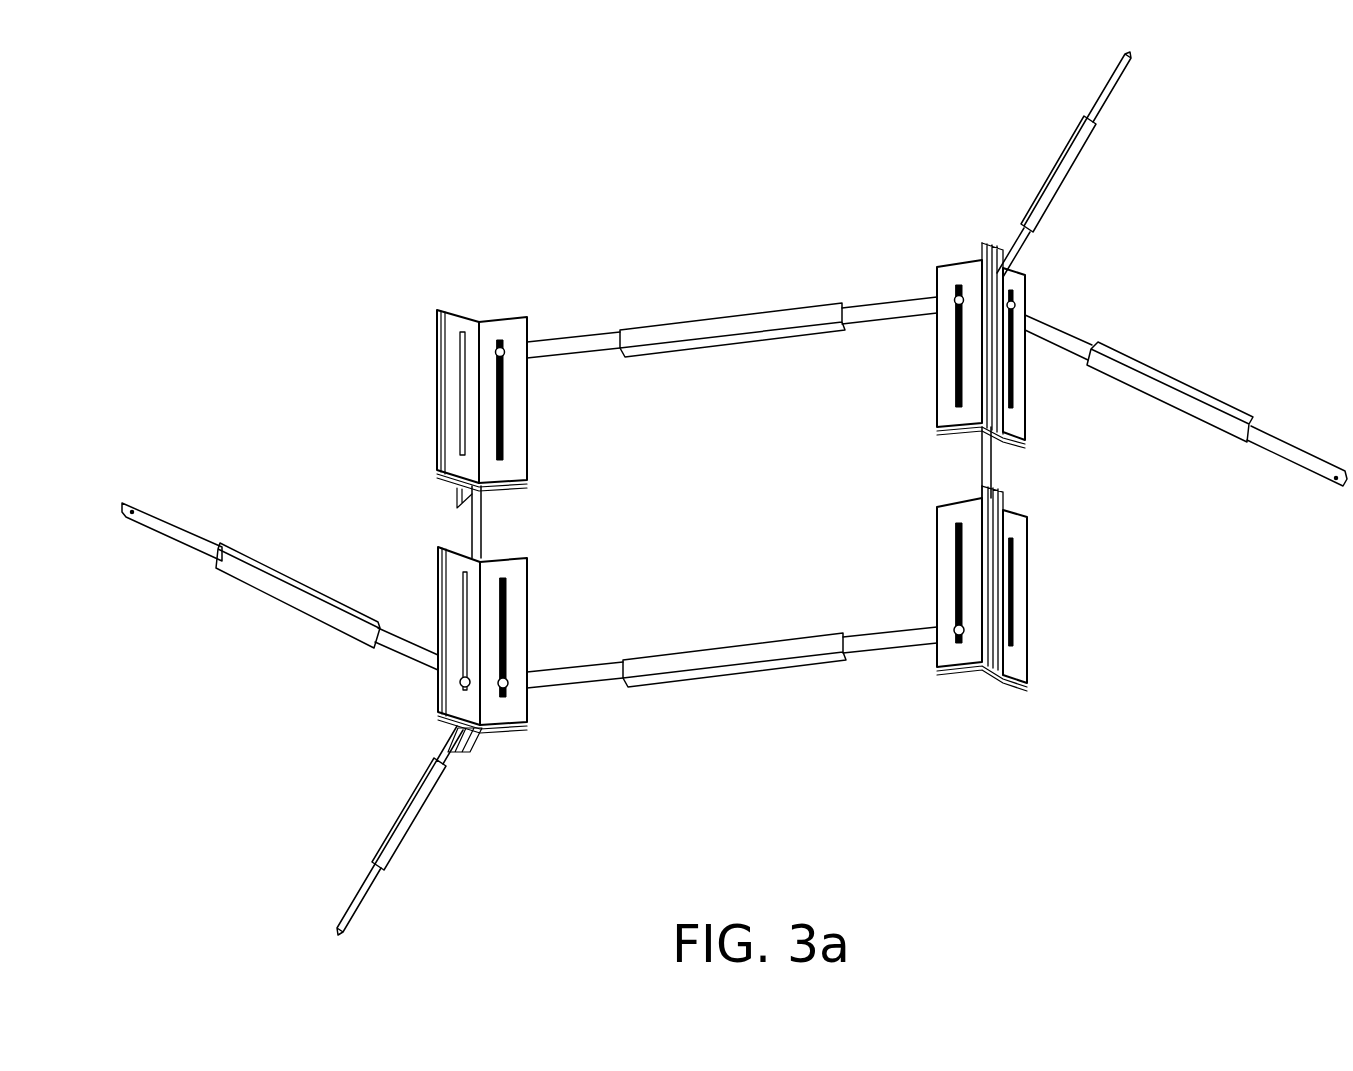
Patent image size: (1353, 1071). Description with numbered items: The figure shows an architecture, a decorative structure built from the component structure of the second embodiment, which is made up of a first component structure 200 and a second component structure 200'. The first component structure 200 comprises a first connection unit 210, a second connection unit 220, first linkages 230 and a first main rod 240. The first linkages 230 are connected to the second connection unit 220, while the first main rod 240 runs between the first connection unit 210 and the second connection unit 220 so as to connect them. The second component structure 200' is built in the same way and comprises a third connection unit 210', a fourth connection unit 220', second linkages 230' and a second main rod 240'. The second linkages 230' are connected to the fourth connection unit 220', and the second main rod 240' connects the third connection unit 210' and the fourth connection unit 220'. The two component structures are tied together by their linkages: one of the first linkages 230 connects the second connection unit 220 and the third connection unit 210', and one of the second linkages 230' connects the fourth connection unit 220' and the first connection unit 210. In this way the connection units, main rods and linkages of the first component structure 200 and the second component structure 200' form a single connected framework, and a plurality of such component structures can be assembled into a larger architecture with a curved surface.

The first component structure 200 is at (535, 481).
The first connection unit 210 is at (533, 409).
The second connection unit 220 is at (535, 649).
The first linkages 230 is at (529, 711).
The first main rod 240 is at (532, 522).
The second component structure 200' is at (1041, 422).
The third connection unit 210' is at (1041, 588).
The fourth connection unit 220' is at (1036, 345).
The second linkages 230' is at (937, 269).
The second main rod 240' is at (1046, 462).